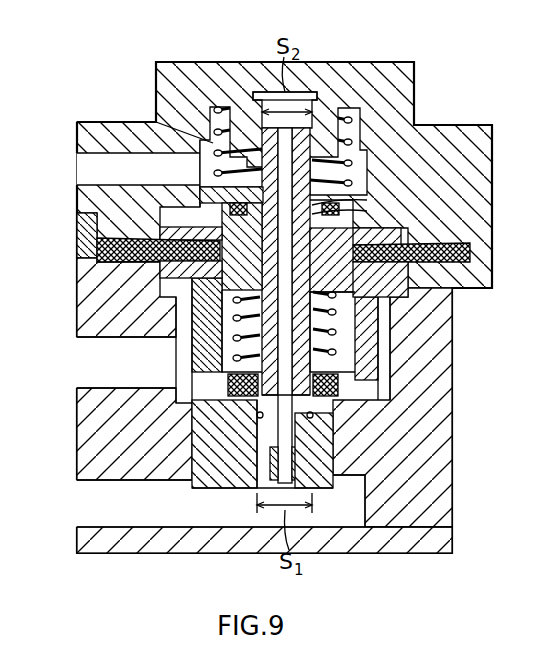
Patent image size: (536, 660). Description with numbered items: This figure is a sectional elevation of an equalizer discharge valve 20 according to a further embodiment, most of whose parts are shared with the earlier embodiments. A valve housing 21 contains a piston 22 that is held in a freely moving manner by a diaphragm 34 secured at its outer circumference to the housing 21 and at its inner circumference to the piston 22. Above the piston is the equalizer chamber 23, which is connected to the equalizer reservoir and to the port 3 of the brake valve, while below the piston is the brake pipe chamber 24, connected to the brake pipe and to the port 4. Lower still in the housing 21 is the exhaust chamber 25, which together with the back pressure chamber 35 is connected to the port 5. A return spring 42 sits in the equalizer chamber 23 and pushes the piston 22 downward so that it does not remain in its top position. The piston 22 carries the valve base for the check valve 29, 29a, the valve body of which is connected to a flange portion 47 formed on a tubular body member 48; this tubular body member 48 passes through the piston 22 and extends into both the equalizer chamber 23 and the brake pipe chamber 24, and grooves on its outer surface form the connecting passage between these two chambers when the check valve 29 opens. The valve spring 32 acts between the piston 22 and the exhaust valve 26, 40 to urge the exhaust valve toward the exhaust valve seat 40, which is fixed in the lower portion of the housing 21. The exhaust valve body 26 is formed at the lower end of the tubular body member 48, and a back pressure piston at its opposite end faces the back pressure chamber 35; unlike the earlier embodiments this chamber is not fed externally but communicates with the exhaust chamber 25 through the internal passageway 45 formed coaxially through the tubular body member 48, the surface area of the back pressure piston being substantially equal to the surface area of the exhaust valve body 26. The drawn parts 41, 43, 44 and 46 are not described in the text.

The port 3 is at (40, 190).
The port 4 is at (40, 382).
The port 5 is at (77, 500).
The equalizer discharge valve 20 is at (318, 56).
The valve housing 21 is at (378, 78).
The piston 22 is at (395, 268).
The equalizer chamber 23 is at (213, 137).
The brake pipe chamber 24 is at (186, 352).
The exhaust chamber 25 is at (203, 512).
The exhaust valve body 26 is at (260, 418).
The check valve 29 is at (345, 230).
The check valve element 29a is at (378, 216).
The valve spring 32 is at (335, 322).
The diaphragm 34 is at (456, 250).
The back pressure chamber 35 is at (258, 92).
The exhaust valve seat 40 is at (320, 422).
The retainer 41 is at (258, 418).
The return spring 42 is at (358, 120).
The spring 43 is at (308, 305).
The spring 44 is at (301, 147).
The internal passageway 45 is at (290, 466).
The piston 46 is at (266, 280).
The flange portion 47 is at (227, 195).
The tubular body member 48 is at (233, 393).